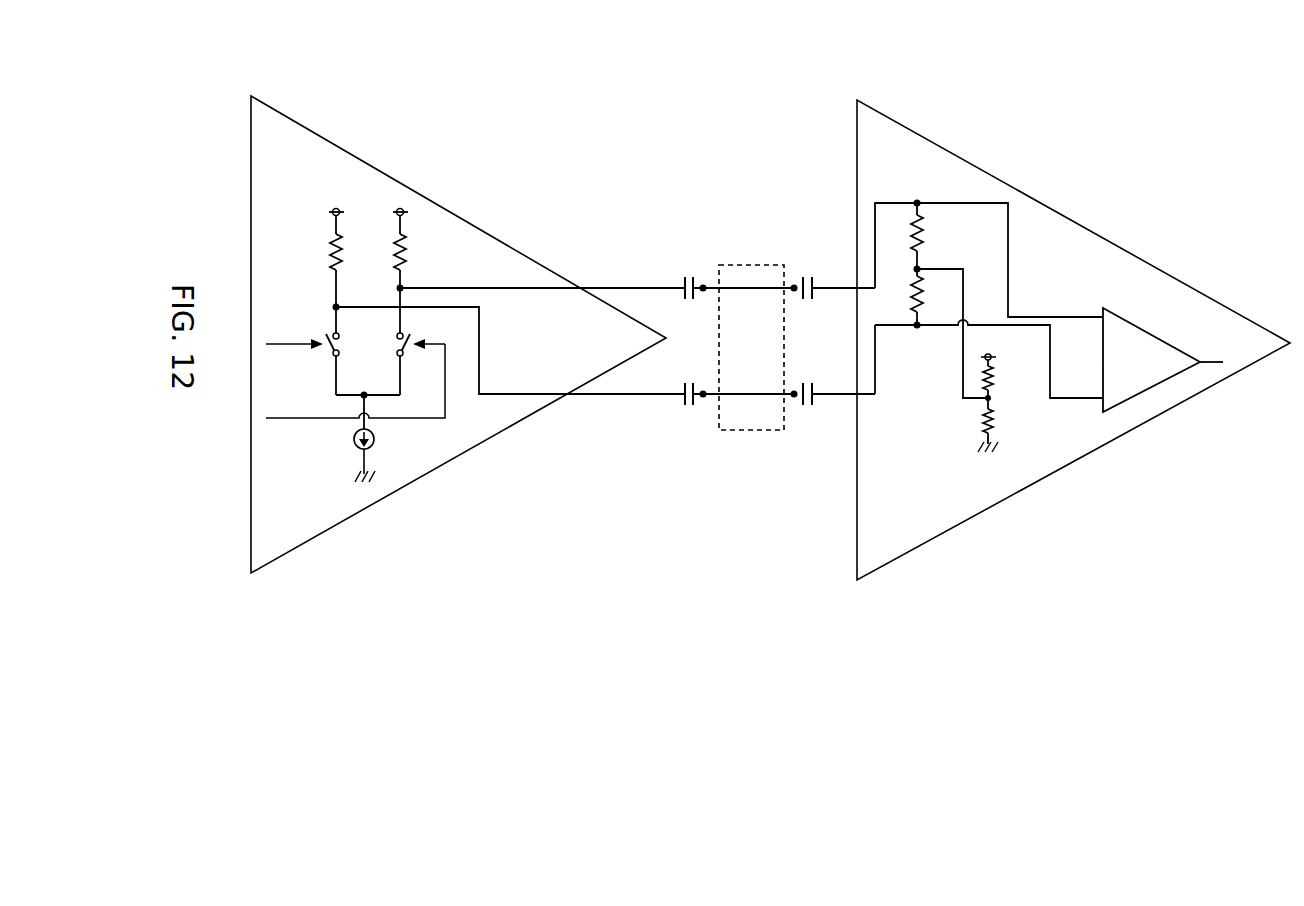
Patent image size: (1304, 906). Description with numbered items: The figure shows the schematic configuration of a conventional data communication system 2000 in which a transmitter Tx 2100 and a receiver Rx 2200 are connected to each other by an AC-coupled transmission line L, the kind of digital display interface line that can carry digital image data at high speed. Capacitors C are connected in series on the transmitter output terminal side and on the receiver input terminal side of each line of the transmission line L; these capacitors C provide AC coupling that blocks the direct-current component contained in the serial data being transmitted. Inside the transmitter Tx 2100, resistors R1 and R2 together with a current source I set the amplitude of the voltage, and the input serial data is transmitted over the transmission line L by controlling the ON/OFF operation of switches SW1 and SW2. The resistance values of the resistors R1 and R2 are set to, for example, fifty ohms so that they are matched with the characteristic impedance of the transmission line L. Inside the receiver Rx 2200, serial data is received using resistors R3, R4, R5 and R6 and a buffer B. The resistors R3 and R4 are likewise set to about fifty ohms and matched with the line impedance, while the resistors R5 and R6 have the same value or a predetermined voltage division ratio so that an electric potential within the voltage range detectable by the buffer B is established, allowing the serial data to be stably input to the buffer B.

The data communication system 2000 is at (370, 66).
The transmitter Tx 2100 is at (463, 219).
The receiver Rx 2200 is at (1016, 189).
The AC-coupled transmission line L is at (752, 265).
The capacitors C is at (777, 356).
The buffer B is at (1148, 334).
The resistor R1 is at (319, 250).
The resistor R2 is at (387, 263).
The resistor R3 is at (934, 236).
The resistor R4 is at (934, 297).
The resistor R5 is at (1000, 368).
The resistor R6 is at (1021, 427).
The switch SW1 is at (302, 351).
The switch SW2 is at (359, 367).
The current source I is at (326, 442).